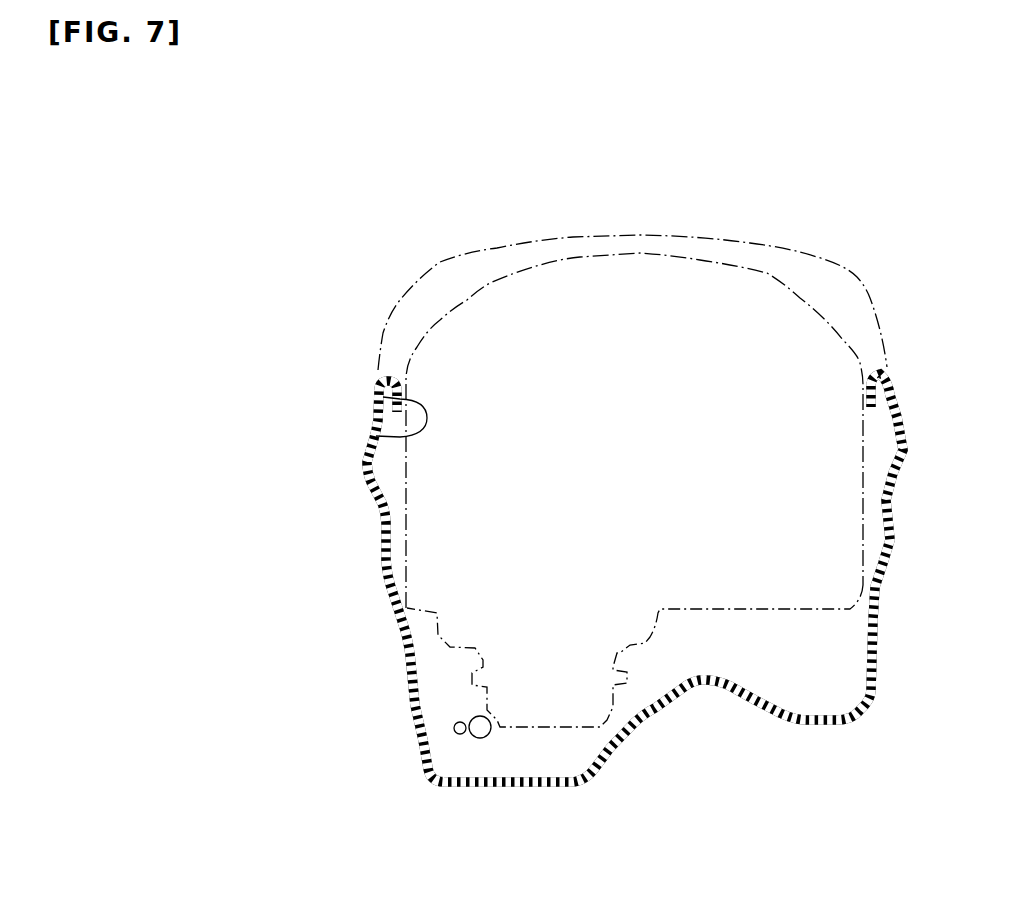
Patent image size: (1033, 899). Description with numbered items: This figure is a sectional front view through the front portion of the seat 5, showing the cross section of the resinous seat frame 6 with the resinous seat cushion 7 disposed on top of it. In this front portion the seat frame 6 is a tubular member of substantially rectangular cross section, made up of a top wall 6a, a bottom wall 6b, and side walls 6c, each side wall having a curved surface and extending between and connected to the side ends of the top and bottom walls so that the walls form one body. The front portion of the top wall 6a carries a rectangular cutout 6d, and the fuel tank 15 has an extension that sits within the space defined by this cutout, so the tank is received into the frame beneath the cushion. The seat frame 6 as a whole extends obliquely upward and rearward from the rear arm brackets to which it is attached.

The seat 5 is at (354, 246).
The seat frame 6 is at (371, 579).
The top wall 6a is at (385, 378).
The bottom wall 6b is at (530, 788).
The side walls 6c is at (380, 513).
The rectangular cutout 6d is at (400, 437).
The seat cushion 7 is at (497, 244).
The fuel tank 15 is at (661, 253).